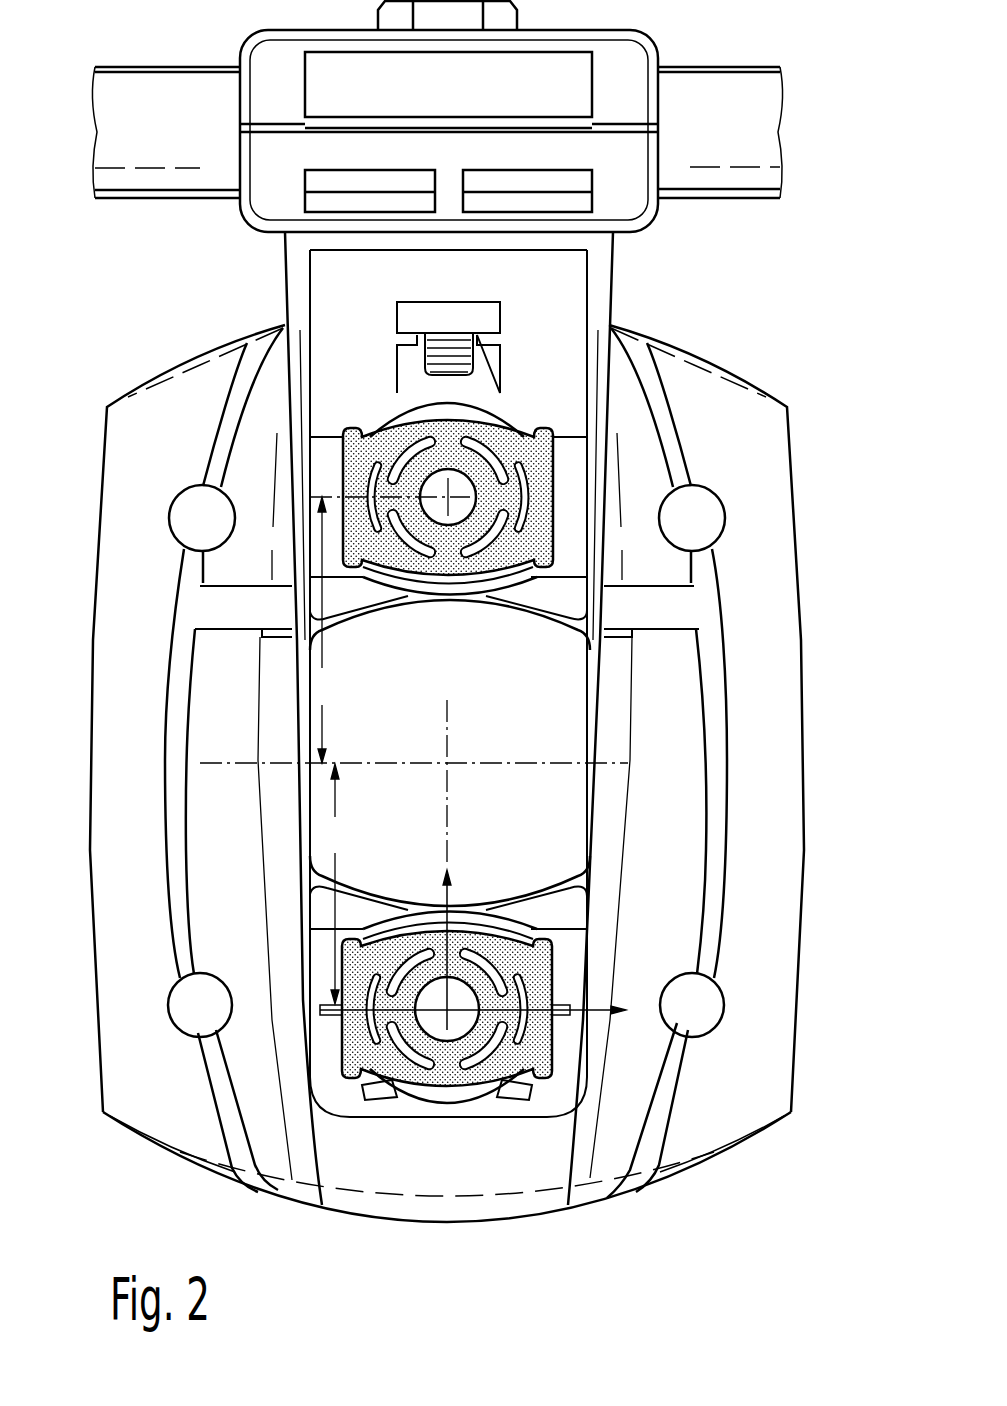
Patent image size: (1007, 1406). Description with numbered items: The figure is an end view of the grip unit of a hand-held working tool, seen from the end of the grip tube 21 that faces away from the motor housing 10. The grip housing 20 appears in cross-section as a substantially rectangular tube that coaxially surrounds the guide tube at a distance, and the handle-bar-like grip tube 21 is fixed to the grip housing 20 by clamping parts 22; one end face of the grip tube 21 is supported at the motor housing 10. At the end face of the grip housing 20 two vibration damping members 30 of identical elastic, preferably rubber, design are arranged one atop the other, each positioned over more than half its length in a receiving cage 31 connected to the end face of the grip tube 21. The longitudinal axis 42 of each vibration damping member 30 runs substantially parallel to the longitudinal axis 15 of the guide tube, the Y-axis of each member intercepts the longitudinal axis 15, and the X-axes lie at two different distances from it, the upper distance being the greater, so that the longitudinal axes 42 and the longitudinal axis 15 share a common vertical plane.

The motor housing 10 is at (780, 627).
The longitudinal axis of the guide tube 15 is at (448, 767).
The grip housing 20 is at (583, 662).
The grip tube 21 is at (714, 92).
The clamping parts 22 is at (253, 153).
The vibration damping member 30 is at (385, 446).
The receiving cage 31 is at (505, 432).
The longitudinal axis of the vibration damping member 42 is at (443, 1017).